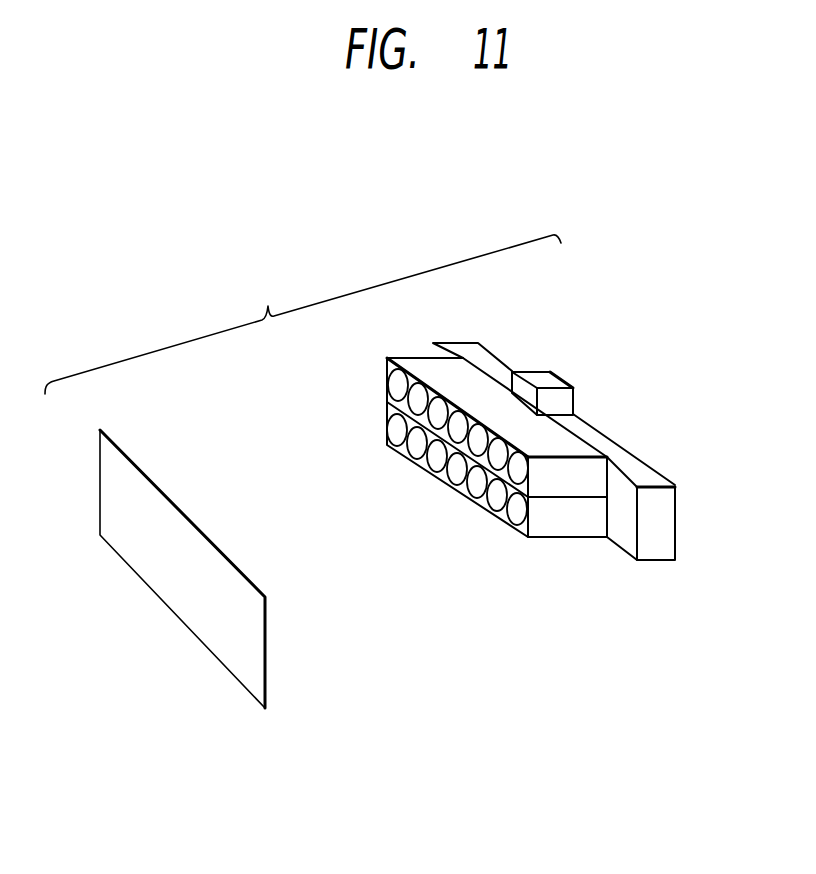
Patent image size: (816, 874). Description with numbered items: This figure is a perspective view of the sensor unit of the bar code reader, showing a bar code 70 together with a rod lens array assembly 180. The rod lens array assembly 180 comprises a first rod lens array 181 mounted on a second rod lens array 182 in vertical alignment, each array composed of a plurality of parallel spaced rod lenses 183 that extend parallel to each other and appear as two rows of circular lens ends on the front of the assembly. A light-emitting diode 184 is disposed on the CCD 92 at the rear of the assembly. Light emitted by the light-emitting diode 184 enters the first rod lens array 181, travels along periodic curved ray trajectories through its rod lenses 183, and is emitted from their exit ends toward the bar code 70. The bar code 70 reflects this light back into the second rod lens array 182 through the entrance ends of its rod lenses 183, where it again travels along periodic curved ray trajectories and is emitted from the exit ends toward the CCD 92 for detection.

The bar code 70 is at (267, 677).
The CCD 92 is at (670, 543).
The rod lens array assembly 180 is at (518, 429).
The first rod lens array 181 is at (556, 487).
The second rod lens array 182 is at (593, 528).
The rod lenses 183 is at (396, 386).
The light-emitting diode 184 is at (570, 398).